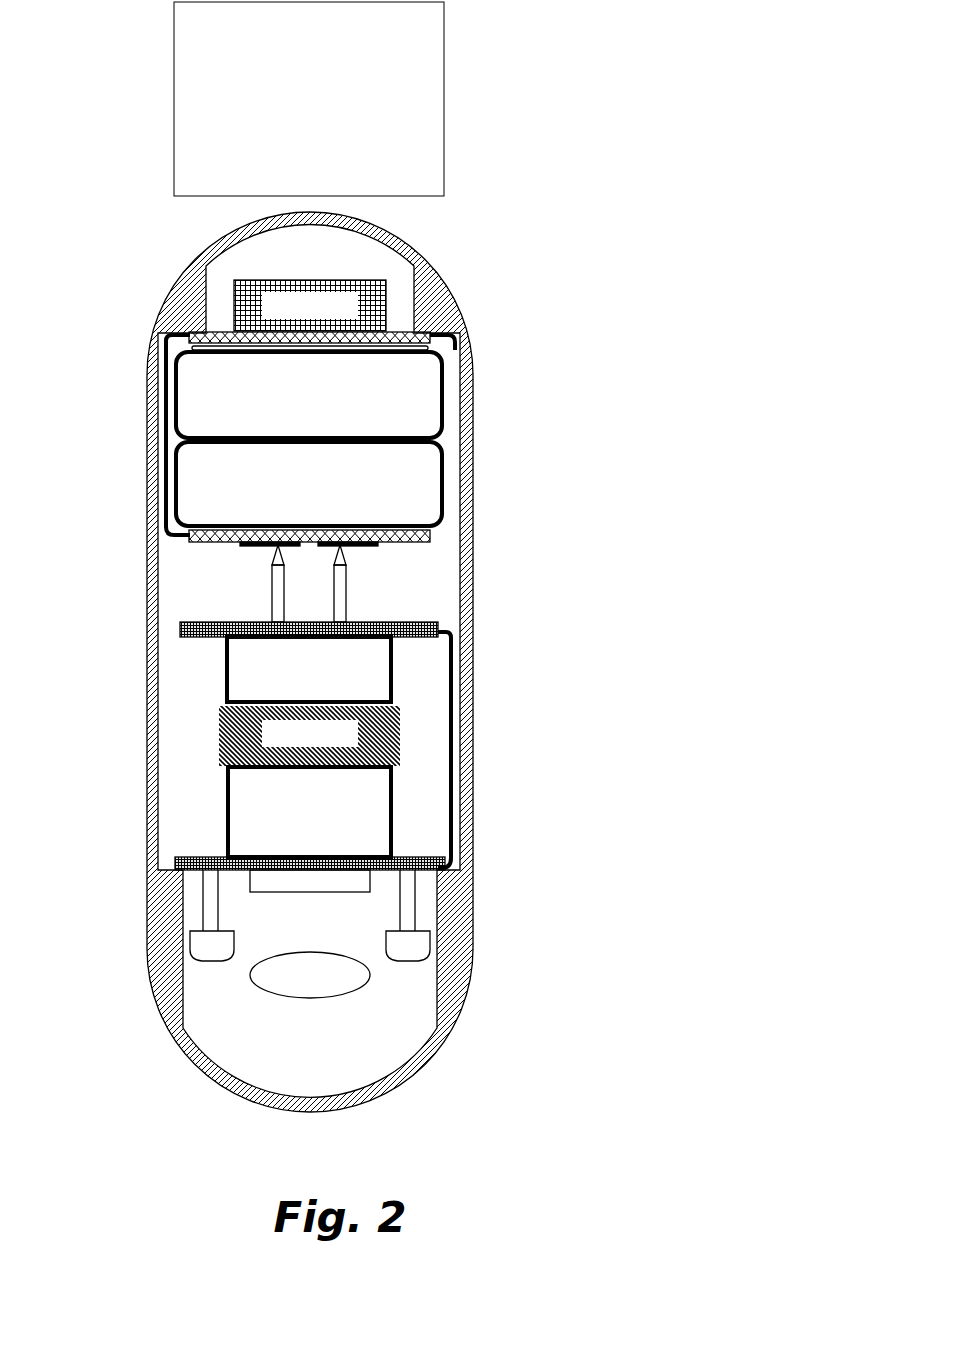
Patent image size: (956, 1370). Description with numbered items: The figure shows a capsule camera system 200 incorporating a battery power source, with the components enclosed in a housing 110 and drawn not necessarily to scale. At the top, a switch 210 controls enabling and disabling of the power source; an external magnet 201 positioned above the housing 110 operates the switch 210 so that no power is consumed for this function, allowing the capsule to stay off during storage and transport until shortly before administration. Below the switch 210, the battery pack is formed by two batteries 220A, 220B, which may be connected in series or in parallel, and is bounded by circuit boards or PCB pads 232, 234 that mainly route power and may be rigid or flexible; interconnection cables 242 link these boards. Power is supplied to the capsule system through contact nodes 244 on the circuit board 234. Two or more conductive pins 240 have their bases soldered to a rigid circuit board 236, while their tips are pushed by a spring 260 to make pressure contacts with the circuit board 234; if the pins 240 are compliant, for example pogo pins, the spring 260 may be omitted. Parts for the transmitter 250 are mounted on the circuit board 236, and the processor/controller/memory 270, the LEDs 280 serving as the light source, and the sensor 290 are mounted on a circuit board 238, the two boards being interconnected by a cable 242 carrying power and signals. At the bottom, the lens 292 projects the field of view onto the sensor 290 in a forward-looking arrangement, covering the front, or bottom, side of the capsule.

The external magnet 201 is at (444, 98).
The capsule device 200 is at (565, 227).
The housing 110 is at (405, 250).
The switch 210 is at (386, 306).
The circuit board 232 is at (430, 335).
The interconnection cable 242 is at (166, 420).
The battery 220A is at (442, 398).
The battery 220B is at (442, 484).
The circuit board 234 is at (432, 532).
The contact nodes 244 is at (268, 545).
The conductive pins 240 is at (272, 593).
The rigid circuit board 236 is at (440, 628).
The transmitter 250 is at (392, 668).
The spring 260 is at (400, 738).
The processor/controller/memory 270 is at (392, 815).
The circuit board 238 is at (448, 868).
The sensor 290 is at (320, 893).
The LEDs 280 is at (190, 948).
The lens 292 is at (368, 975).